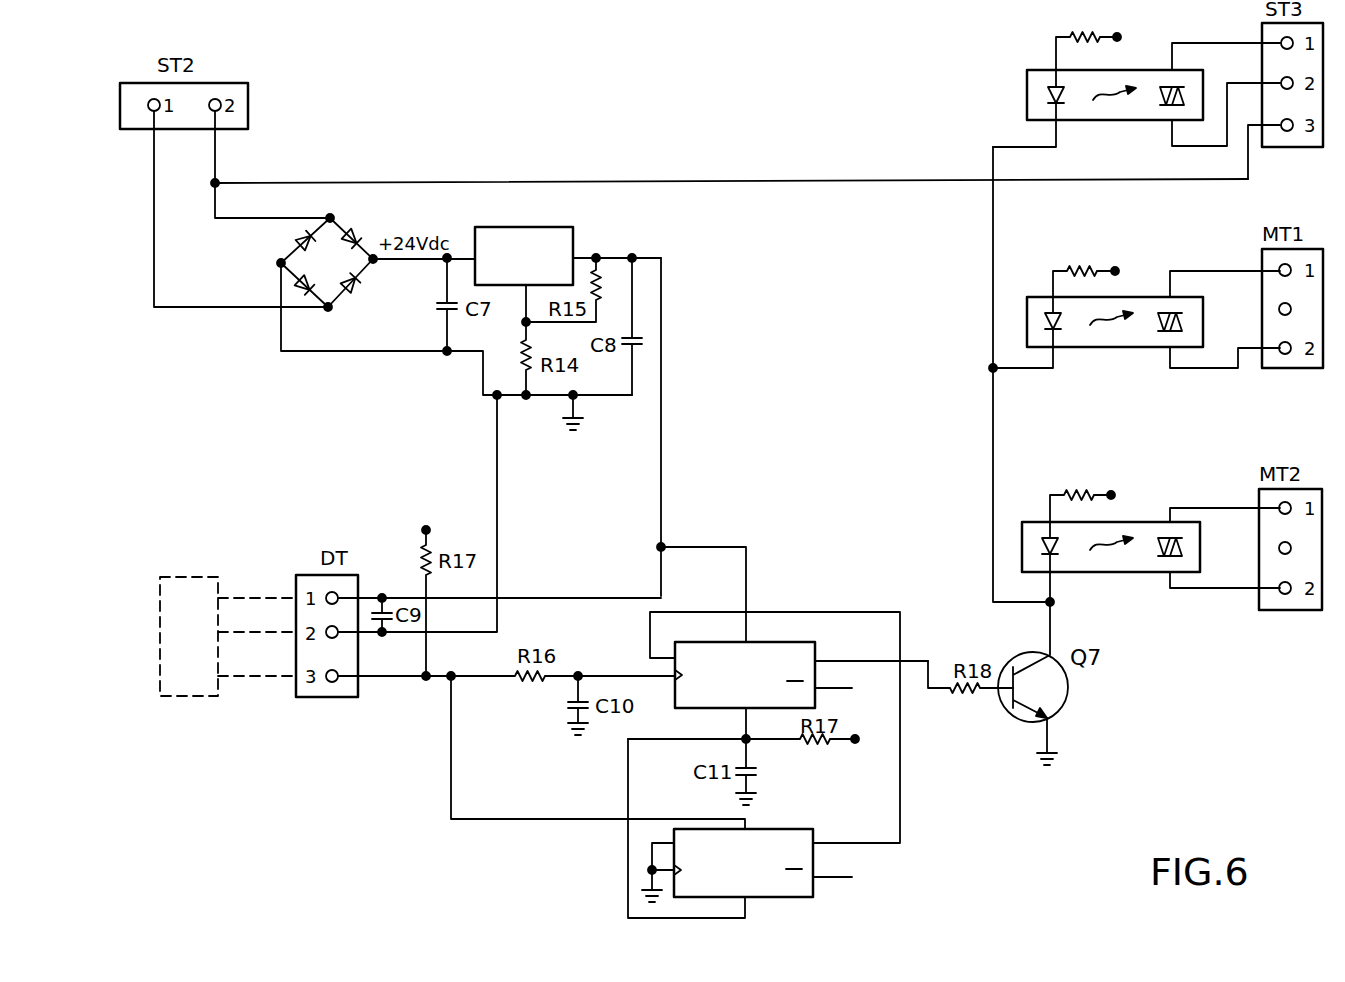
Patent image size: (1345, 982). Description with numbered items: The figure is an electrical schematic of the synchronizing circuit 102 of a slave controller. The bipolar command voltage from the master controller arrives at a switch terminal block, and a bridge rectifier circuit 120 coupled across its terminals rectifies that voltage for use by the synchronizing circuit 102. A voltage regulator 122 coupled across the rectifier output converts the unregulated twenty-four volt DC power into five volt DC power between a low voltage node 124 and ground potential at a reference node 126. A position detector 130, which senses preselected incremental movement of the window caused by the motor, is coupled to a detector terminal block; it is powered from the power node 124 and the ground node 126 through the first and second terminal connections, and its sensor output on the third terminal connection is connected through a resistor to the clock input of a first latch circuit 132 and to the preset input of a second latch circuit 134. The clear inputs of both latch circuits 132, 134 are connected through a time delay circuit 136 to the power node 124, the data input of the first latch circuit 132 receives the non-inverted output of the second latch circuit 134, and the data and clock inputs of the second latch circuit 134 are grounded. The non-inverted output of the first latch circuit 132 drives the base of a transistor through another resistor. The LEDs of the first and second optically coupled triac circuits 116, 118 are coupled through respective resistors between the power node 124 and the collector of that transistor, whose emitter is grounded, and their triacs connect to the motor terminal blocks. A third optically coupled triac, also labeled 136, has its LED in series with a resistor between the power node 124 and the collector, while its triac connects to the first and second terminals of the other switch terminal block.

The synchronizing circuit 102 is at (294, 461).
The first optically coupled triac circuit 116 is at (1130, 298).
The second optically coupled triac circuit 118 is at (1137, 521).
The bridge rectifier circuit 120 is at (347, 221).
The voltage regulator 122 is at (562, 228).
The low voltage node 124 is at (661, 258).
The reference node 126 is at (577, 400).
The position detector 130 is at (190, 585).
The first latch circuit 132 is at (785, 642).
The second latch circuit 134 is at (782, 832).
The time delay circuit 136 is at (1125, 79).